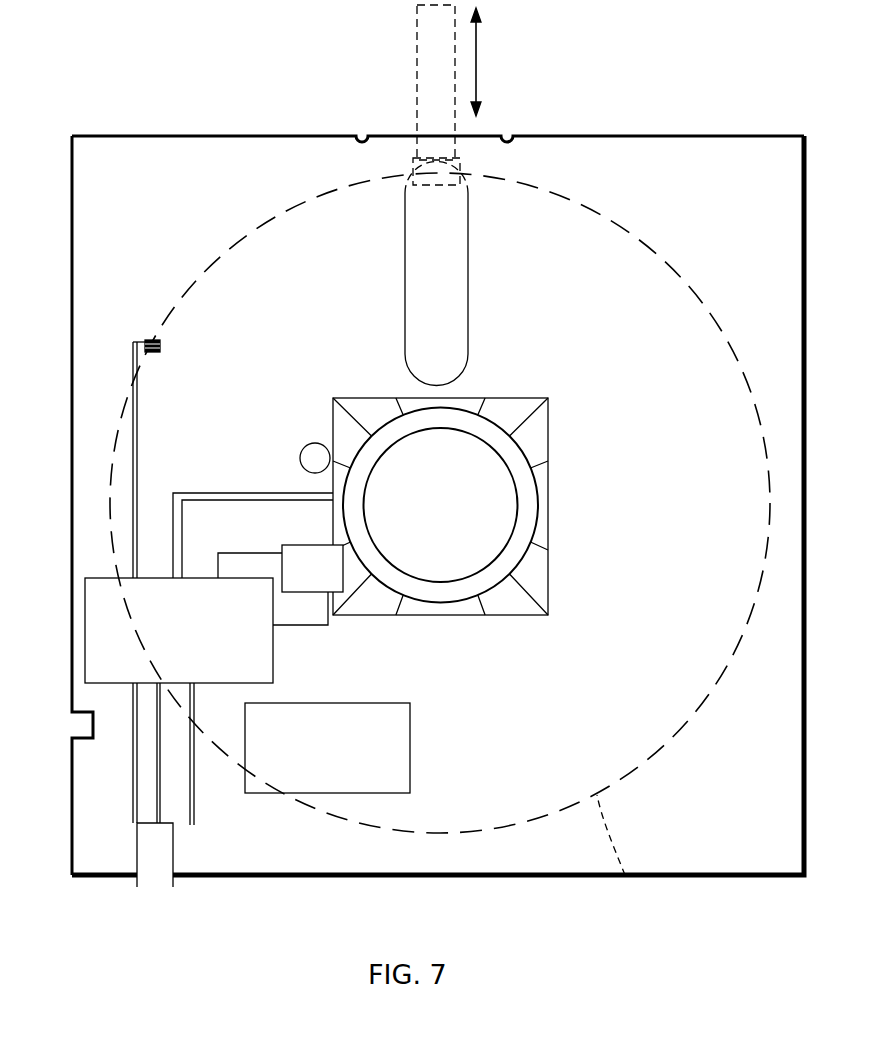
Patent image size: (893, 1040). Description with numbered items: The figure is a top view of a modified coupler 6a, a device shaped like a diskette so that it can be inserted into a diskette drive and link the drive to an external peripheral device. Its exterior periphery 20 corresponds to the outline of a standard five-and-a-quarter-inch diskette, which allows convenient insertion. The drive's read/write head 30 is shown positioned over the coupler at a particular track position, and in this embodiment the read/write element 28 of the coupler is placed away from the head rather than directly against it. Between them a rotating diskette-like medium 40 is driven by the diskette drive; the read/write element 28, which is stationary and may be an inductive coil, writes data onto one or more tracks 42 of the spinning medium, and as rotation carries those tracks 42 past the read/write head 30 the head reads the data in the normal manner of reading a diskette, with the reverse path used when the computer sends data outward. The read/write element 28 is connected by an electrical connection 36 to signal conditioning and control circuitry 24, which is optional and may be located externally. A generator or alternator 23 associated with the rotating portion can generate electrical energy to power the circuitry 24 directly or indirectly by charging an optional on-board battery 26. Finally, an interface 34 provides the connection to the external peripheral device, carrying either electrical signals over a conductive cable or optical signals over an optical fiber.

The modified coupler 6a is at (776, 243).
The exterior periphery 20 is at (806, 588).
The read/write head 30 is at (440, 65).
The rotating diskette-like medium 40 is at (677, 663).
The tracks 42 is at (625, 875).
The generator or alternator 23 is at (308, 554).
The signal conditioning and control circuitry 24 is at (85, 600).
The on-board battery 26 is at (245, 742).
The electrical connection 36 is at (130, 400).
The read/write element 28 is at (150, 338).
The interface 34 is at (149, 868).